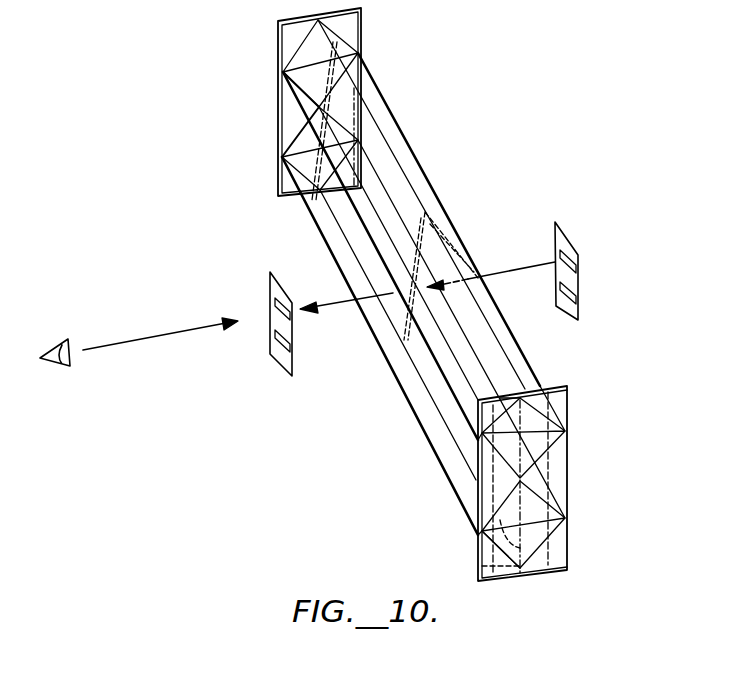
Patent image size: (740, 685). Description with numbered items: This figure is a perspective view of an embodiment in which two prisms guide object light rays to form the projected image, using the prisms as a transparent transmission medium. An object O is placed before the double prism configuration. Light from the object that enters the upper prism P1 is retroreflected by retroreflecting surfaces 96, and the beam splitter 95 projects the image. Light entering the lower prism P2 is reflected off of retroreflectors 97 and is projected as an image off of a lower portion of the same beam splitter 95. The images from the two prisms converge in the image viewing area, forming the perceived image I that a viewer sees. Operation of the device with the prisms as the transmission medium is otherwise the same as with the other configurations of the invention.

The beam splitter 95 is at (520, 453).
The retroreflecting surfaces 96 is at (503, 396).
The retroreflectors 97 is at (473, 527).
The upper prism P1 is at (548, 433).
The lower prism P2 is at (540, 534).
The object O is at (578, 257).
The perceived image I is at (270, 284).